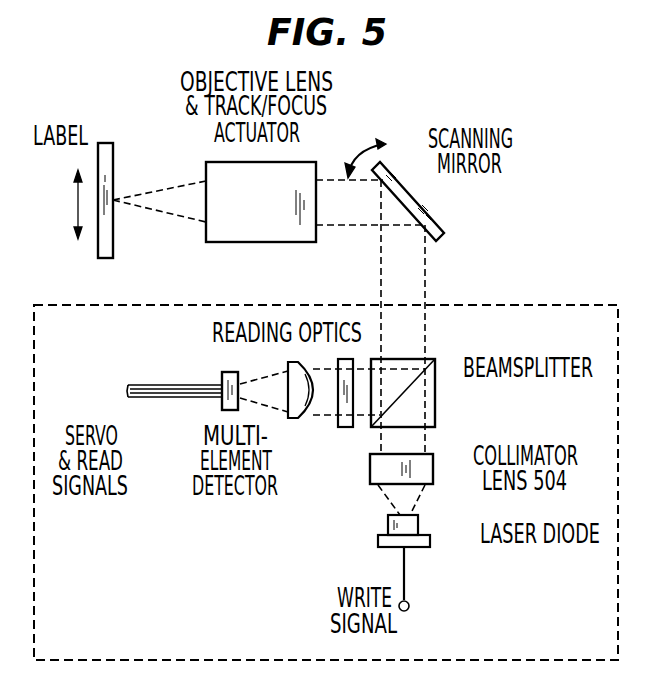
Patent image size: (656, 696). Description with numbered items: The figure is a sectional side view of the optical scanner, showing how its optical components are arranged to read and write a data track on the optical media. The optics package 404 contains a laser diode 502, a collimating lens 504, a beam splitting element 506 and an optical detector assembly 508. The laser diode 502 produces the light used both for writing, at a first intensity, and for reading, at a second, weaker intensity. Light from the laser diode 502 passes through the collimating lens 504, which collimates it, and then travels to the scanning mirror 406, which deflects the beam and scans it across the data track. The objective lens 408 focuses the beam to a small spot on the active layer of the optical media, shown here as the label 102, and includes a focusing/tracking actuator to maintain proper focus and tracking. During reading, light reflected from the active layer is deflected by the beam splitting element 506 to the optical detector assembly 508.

The label 102 is at (98, 254).
The objective lens 408 is at (279, 211).
The scanning mirror 406 is at (405, 193).
The optics package 404 is at (492, 303).
The optical detector assembly 508 is at (226, 374).
The beam splitting element 506 is at (436, 391).
The collimating lens 504 is at (434, 470).
The laser diode 502 is at (431, 541).